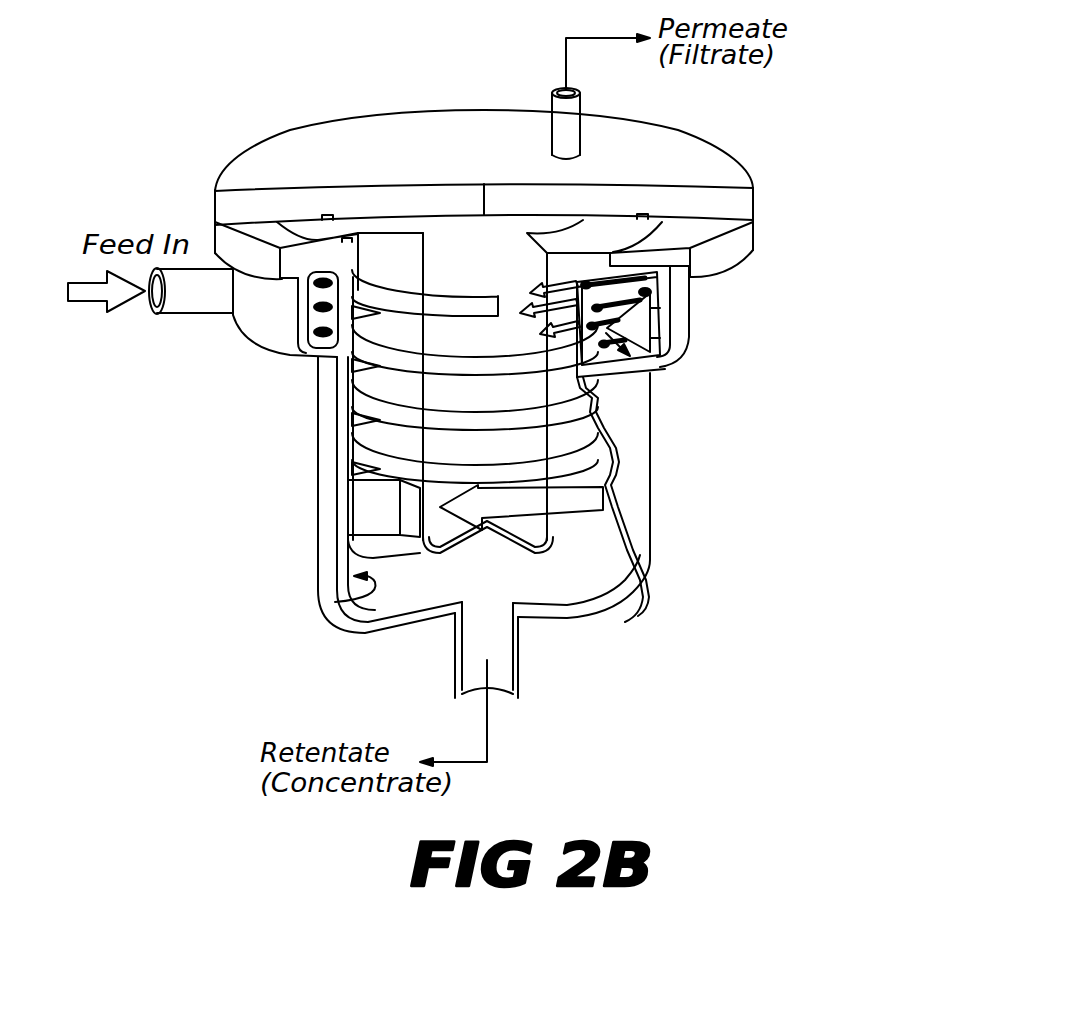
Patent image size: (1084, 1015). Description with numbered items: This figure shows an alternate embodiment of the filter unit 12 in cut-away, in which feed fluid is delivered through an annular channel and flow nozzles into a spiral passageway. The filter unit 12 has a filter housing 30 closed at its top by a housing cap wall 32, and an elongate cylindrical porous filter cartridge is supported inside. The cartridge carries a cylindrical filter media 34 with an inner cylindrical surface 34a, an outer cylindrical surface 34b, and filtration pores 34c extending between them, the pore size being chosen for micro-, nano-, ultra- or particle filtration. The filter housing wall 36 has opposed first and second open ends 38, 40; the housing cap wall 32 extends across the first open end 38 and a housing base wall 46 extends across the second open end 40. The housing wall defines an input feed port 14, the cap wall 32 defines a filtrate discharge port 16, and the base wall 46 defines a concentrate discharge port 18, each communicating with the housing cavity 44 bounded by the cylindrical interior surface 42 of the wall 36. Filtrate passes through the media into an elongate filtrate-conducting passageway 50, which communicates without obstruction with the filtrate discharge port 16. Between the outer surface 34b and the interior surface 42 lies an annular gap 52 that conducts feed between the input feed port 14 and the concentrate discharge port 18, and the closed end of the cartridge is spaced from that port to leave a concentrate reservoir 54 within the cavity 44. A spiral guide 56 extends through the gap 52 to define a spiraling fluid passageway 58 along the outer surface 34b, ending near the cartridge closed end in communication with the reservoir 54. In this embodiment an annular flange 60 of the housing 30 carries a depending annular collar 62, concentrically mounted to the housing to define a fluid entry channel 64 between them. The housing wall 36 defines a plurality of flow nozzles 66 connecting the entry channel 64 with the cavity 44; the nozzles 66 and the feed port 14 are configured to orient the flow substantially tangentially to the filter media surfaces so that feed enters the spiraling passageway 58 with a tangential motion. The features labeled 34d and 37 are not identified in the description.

The filter unit 12 is at (817, 462).
The input feed port 14 is at (142, 310).
The filtrate discharge port 16 is at (572, 92).
The concentrate discharge port 18 is at (505, 700).
The filter housing 30 is at (318, 445).
The housing cap wall 32 is at (343, 157).
The filter media 34 is at (580, 518).
The inner cylindrical surface 34a is at (433, 434).
The outer cylindrical surface 34b is at (588, 508).
The filtration pores 34c is at (408, 541).
The core top 34d is at (419, 240).
The filter housing wall 36 is at (333, 401).
The inner wall 37 is at (337, 503).
The first open end 38 is at (597, 297).
The second open end 40 is at (372, 602).
The interior surface 42 is at (368, 612).
The housing cavity 44 is at (650, 578).
The housing base wall 46 is at (403, 622).
The filtrate-conducting passageway 50 is at (530, 473).
The annular gap 52 is at (585, 454).
The concentrate reservoir 54 is at (547, 578).
The spiral guide 56 is at (340, 360).
The spiraling fluid passageway 58 is at (358, 452).
The annular flange 60 is at (752, 234).
The annular collar 62 is at (698, 346).
The fluid entry channel 64 is at (652, 328).
The flow nozzles 66 is at (693, 360).